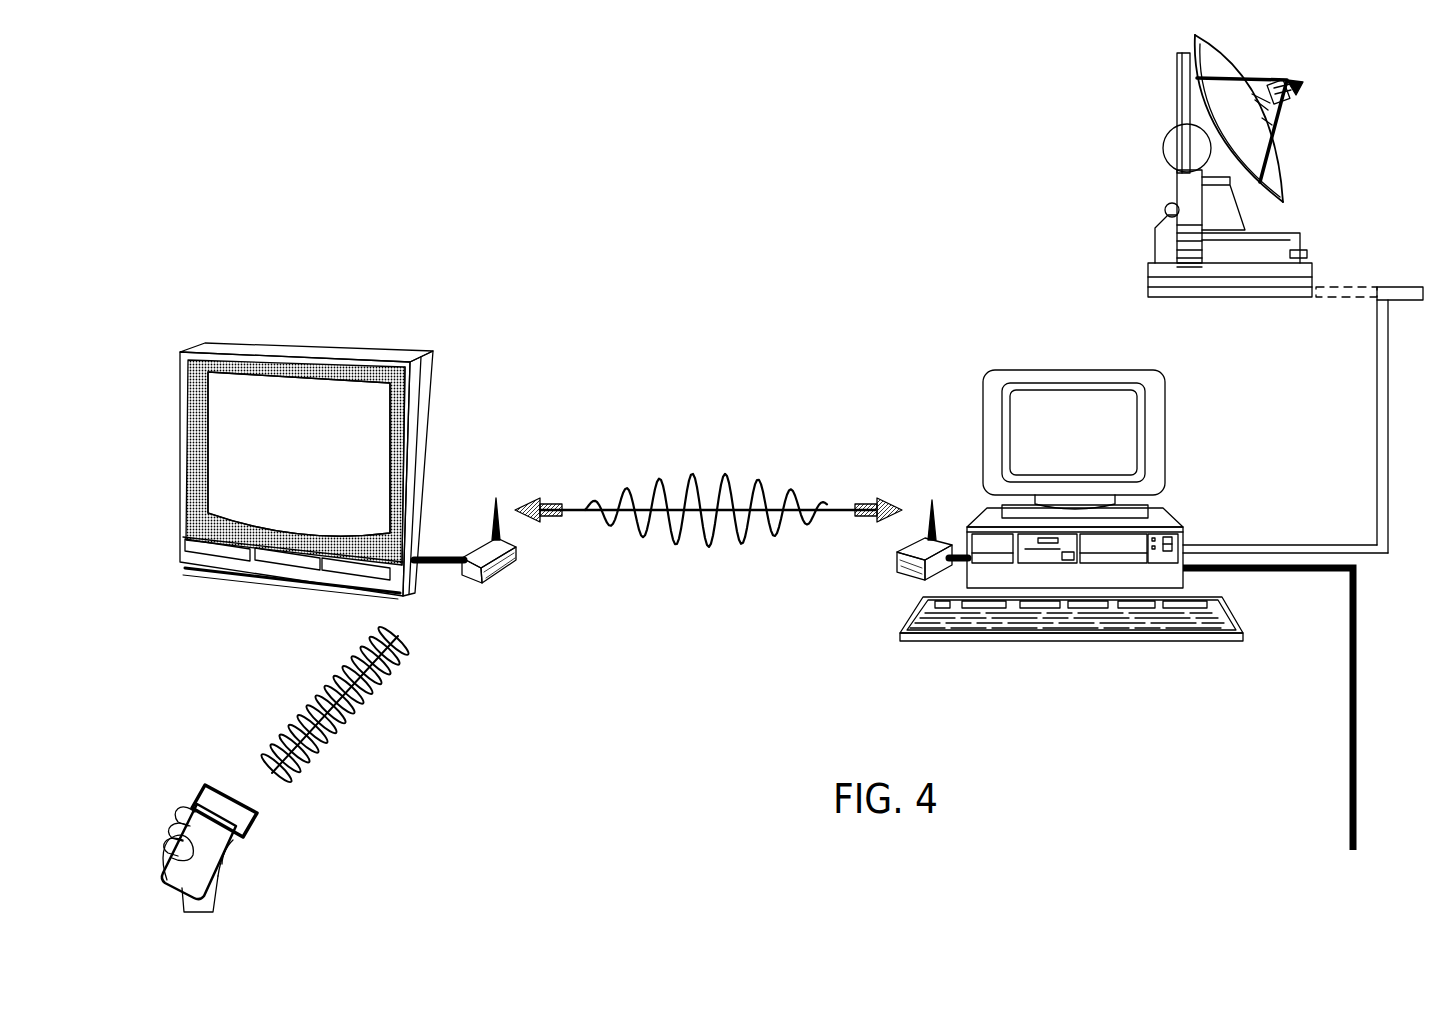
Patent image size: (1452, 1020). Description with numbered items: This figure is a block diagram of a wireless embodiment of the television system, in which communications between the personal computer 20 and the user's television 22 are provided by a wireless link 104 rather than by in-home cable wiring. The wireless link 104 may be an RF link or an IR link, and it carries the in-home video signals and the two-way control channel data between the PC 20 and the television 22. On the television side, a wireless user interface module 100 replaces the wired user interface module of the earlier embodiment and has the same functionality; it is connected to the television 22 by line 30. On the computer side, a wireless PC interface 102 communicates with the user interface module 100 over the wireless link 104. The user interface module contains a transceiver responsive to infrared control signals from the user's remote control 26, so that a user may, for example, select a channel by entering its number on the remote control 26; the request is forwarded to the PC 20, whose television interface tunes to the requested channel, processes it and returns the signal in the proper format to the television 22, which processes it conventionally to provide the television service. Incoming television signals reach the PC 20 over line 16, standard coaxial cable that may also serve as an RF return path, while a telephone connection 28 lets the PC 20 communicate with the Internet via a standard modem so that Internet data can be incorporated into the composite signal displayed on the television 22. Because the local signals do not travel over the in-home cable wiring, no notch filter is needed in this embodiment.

The television 22 is at (364, 347).
The personal computer 20 is at (1012, 367).
The line 30 is at (449, 554).
The wireless user interface module 100 is at (491, 580).
The wireless link 104 is at (692, 547).
The wireless PC interface 102 is at (897, 570).
The line 16 is at (1297, 544).
The telephone connection 28 is at (1350, 735).
The remote control 26 is at (227, 848).